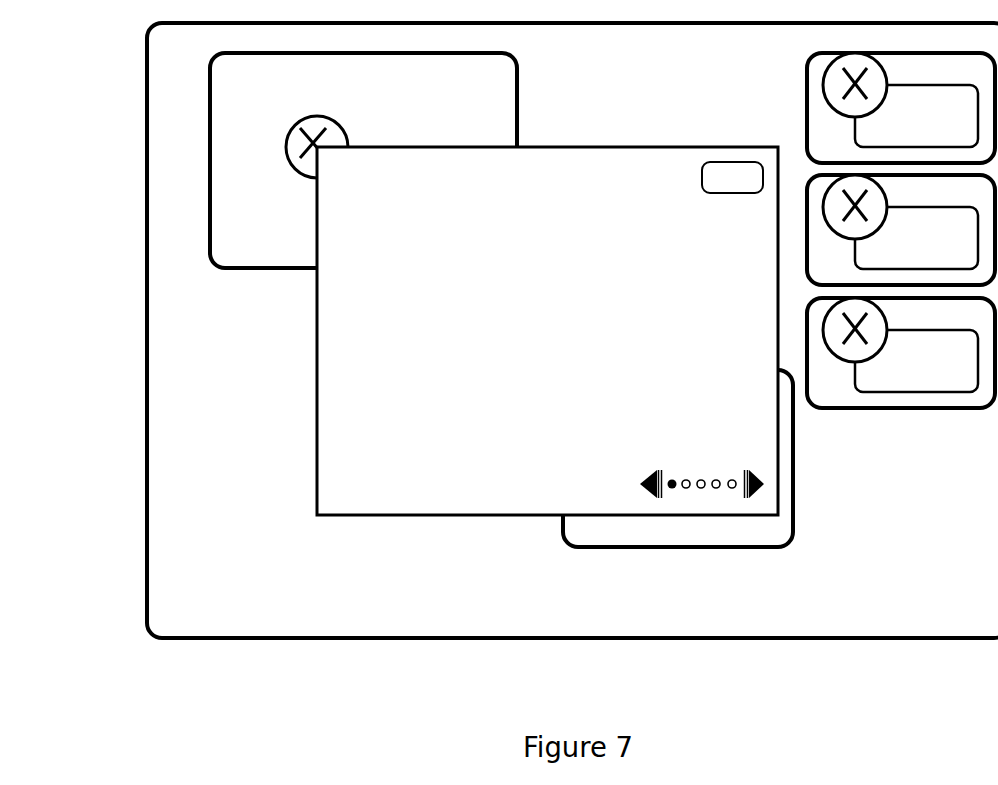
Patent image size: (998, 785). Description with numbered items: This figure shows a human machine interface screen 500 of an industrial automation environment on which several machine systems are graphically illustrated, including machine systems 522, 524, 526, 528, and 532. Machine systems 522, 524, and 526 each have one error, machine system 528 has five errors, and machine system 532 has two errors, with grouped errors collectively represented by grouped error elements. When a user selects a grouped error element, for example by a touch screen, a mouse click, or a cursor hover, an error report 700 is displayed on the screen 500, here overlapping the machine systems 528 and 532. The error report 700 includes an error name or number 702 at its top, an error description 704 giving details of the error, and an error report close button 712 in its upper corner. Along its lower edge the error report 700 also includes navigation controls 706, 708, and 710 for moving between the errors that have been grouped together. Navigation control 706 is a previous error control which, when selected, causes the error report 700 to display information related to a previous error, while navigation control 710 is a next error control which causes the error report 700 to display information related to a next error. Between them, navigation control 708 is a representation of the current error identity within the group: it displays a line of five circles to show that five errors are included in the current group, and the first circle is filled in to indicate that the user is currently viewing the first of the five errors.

The human machine interface screen 500 is at (596, 617).
The machine system 522 is at (964, 80).
The machine system 524 is at (964, 202).
The machine system 526 is at (964, 325).
The machine system 528 is at (258, 265).
The machine system 532 is at (612, 541).
The error report 700 is at (572, 140).
The error name or number 702 is at (443, 165).
The error description 704 is at (527, 241).
The previous error control 706 is at (637, 478).
The current error identity representation 708 is at (695, 472).
The next error control 710 is at (755, 464).
The error report close button 712 is at (702, 187).